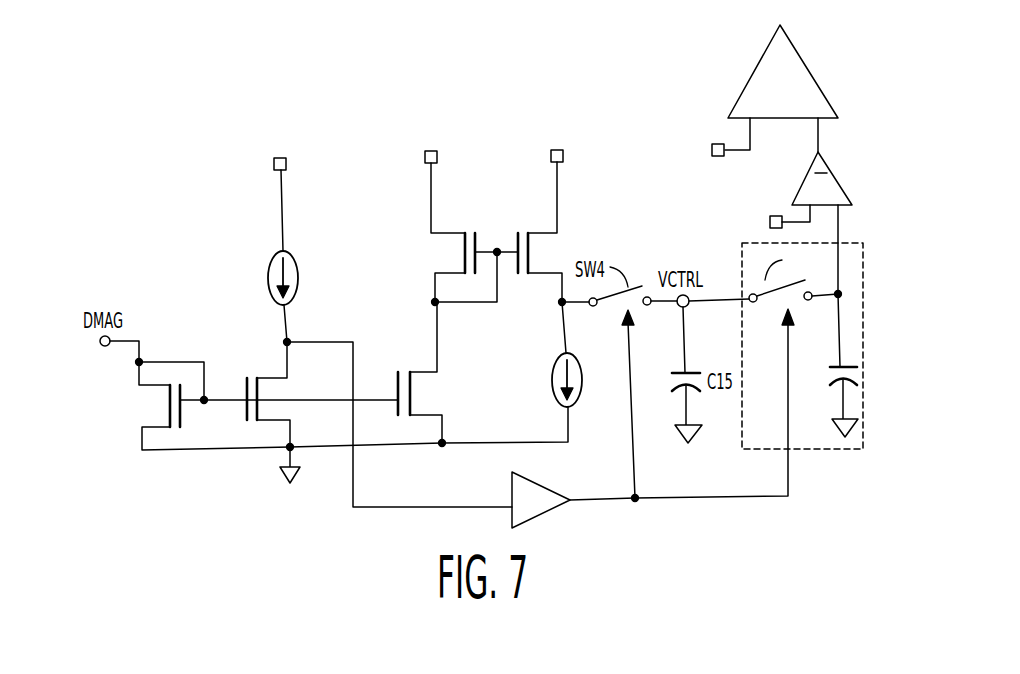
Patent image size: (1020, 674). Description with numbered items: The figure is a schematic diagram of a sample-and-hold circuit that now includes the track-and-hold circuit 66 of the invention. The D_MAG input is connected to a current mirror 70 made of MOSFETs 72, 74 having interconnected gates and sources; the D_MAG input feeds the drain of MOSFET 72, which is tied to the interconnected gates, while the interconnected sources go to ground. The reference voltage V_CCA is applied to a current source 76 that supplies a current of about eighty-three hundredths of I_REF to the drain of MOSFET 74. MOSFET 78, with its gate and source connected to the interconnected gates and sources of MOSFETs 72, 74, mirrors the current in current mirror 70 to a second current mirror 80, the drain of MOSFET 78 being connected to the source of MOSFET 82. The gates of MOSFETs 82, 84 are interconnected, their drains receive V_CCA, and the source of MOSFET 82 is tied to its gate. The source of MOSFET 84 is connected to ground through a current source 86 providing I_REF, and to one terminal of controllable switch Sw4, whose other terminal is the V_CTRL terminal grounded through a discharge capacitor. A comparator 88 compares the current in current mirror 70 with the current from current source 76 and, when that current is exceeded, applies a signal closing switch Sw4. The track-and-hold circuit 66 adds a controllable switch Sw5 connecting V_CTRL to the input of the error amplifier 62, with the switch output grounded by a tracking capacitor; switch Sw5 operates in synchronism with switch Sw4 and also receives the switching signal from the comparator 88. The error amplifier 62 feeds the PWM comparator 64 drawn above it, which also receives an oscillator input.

The error amplifier 62 is at (840, 180).
The PWM comparator 64 is at (812, 70).
The track-and-hold circuit 66 is at (813, 452).
The current mirror 70 is at (225, 368).
The MOSFET 72 is at (170, 400).
The MOSFET 74 is at (265, 392).
The current source 76 is at (288, 250).
The MOSFET 78 is at (422, 368).
The current mirror 80 is at (488, 166).
The MOSFET 82 is at (465, 254).
The MOSFET 84 is at (540, 252).
The current source 86 is at (552, 380).
The comparator 88 is at (537, 478).